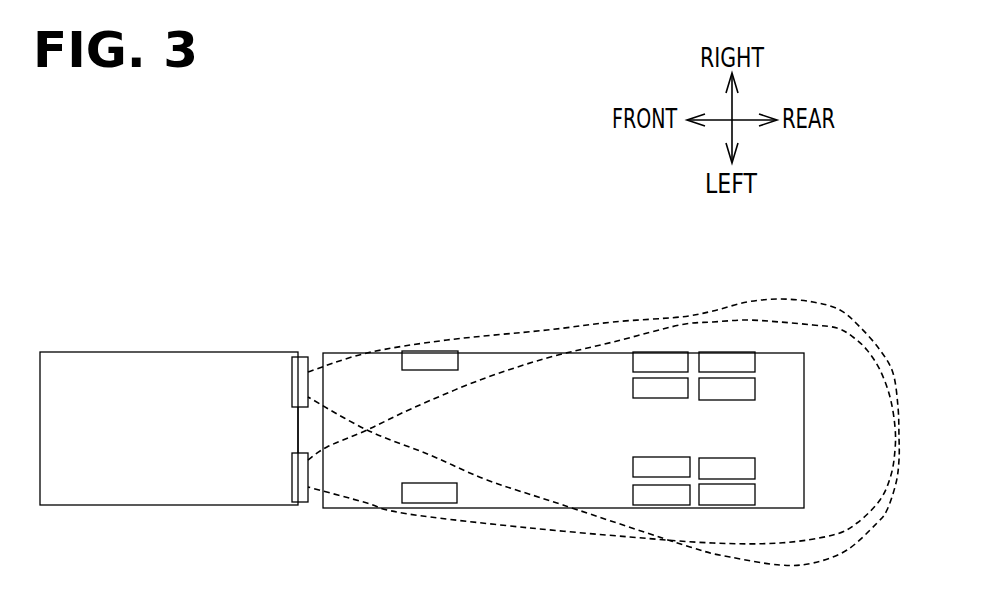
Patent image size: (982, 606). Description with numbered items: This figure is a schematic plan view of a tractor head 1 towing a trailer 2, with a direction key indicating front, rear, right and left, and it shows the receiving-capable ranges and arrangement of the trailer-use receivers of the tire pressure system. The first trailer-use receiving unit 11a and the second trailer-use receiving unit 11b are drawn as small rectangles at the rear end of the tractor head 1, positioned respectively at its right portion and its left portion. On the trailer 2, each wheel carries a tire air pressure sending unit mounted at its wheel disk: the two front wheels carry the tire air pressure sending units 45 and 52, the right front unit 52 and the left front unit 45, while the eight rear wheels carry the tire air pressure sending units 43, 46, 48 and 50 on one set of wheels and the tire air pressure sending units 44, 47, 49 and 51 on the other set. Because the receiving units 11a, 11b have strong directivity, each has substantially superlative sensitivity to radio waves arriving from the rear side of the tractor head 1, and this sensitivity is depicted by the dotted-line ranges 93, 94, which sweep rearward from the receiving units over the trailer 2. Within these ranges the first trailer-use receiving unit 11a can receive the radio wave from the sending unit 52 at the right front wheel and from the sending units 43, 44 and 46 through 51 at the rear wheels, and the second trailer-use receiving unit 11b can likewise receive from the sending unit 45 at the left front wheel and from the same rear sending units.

The tractor head 1 is at (60, 505).
The trailer 2 is at (804, 430).
The first trailer-use receiving unit 11a is at (293, 352).
The second trailer-use receiving unit 11b is at (305, 505).
The tire air pressure sending unit 43 is at (633, 495).
The tire air pressure sending unit 44 is at (755, 495).
The tire air pressure sending unit 45 is at (428, 507).
The tire air pressure sending unit 46 is at (633, 467).
The tire air pressure sending unit 47 is at (755, 468).
The tire air pressure sending unit 48 is at (633, 388).
The tire air pressure sending unit 49 is at (755, 388).
The tire air pressure sending unit 50 is at (633, 362).
The tire air pressure sending unit 51 is at (755, 362).
The tire air pressure sending unit 52 is at (437, 351).
The dotted-line range 93 is at (850, 318).
The dotted-line range 94 is at (744, 303).